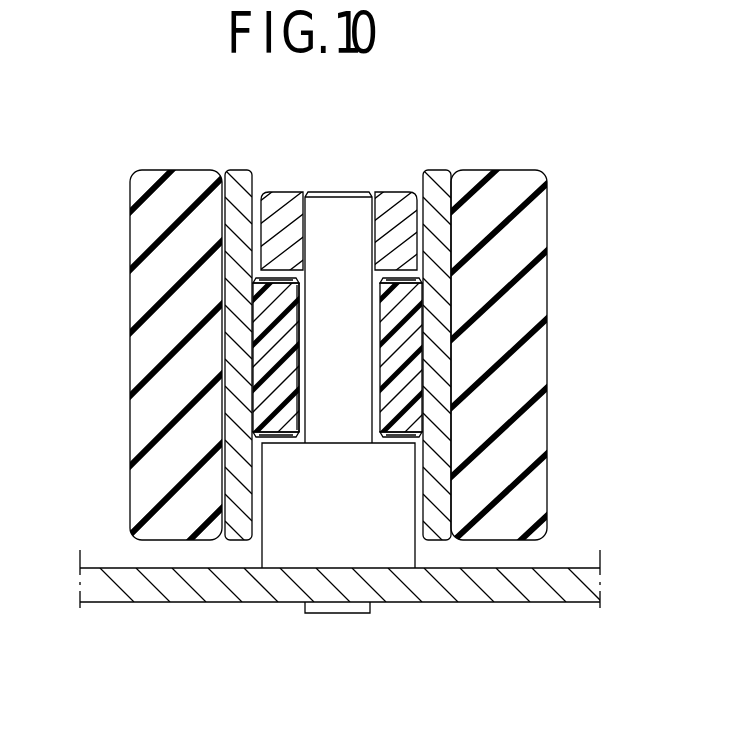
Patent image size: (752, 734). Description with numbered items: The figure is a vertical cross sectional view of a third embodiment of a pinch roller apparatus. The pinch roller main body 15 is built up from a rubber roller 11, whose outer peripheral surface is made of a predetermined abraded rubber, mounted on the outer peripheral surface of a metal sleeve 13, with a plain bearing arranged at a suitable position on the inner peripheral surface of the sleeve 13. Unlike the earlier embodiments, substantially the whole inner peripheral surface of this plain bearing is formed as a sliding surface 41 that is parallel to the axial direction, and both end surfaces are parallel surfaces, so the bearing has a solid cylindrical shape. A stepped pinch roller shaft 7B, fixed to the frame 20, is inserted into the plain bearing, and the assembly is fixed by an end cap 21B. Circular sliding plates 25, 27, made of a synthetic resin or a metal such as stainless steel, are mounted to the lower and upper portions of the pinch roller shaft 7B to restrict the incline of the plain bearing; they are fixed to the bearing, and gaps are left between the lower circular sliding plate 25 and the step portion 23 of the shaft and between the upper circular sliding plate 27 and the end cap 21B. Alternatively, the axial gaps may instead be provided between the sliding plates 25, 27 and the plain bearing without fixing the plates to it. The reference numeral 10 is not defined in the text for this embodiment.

The magnet body 10 is at (262, 357).
The rubber roller 11 is at (547, 393).
The metal sleeve 13 is at (443, 467).
The pinch roller main body 15 is at (460, 380).
The frame 20 is at (540, 590).
The end cap 21B is at (395, 200).
The step portion 23 is at (337, 442).
The circular sliding plate 25 is at (280, 437).
The circular sliding plate 27 is at (272, 280).
The sliding surface 41 is at (300, 337).
The pinch roller shaft 7B is at (383, 552).